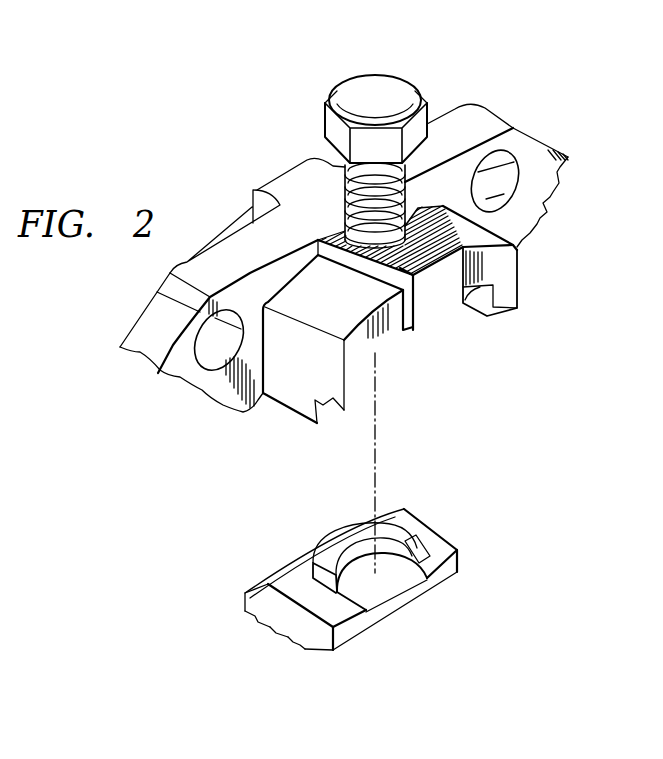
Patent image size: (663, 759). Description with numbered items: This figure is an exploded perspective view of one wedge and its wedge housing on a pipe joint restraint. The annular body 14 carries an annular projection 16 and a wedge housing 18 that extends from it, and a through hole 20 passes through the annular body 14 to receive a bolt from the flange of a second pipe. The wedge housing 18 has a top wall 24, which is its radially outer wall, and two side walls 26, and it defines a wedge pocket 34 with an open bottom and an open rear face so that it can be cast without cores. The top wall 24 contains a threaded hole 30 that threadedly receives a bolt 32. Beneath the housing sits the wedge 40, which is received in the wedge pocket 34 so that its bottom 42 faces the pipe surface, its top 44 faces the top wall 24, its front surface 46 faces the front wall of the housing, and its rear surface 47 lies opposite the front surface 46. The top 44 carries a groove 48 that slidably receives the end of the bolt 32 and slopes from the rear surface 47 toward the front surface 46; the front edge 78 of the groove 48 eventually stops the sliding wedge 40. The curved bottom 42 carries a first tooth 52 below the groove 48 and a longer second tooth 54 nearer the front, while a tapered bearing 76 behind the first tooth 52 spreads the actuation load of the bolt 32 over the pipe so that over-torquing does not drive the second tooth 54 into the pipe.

The annular body 14 is at (446, 120).
The annular projection 16 is at (235, 226).
The wedge housing 18 is at (538, 326).
The through hole 20 is at (510, 185).
The top wall 24 is at (455, 308).
The side wall 26 is at (512, 283).
The hole 30 is at (343, 224).
The bolt 32 is at (374, 78).
The wedge pocket 34 is at (428, 366).
The wedge 40 is at (406, 505).
The bottom 42 is at (280, 634).
The top 44 is at (442, 547).
The front surface 46 is at (244, 603).
The rear surface 47 is at (458, 568).
The groove 48 is at (380, 587).
The first tooth 52 is at (300, 646).
The second tooth 54 is at (253, 624).
The bearing 76 is at (314, 654).
The front edge 78 is at (345, 548).